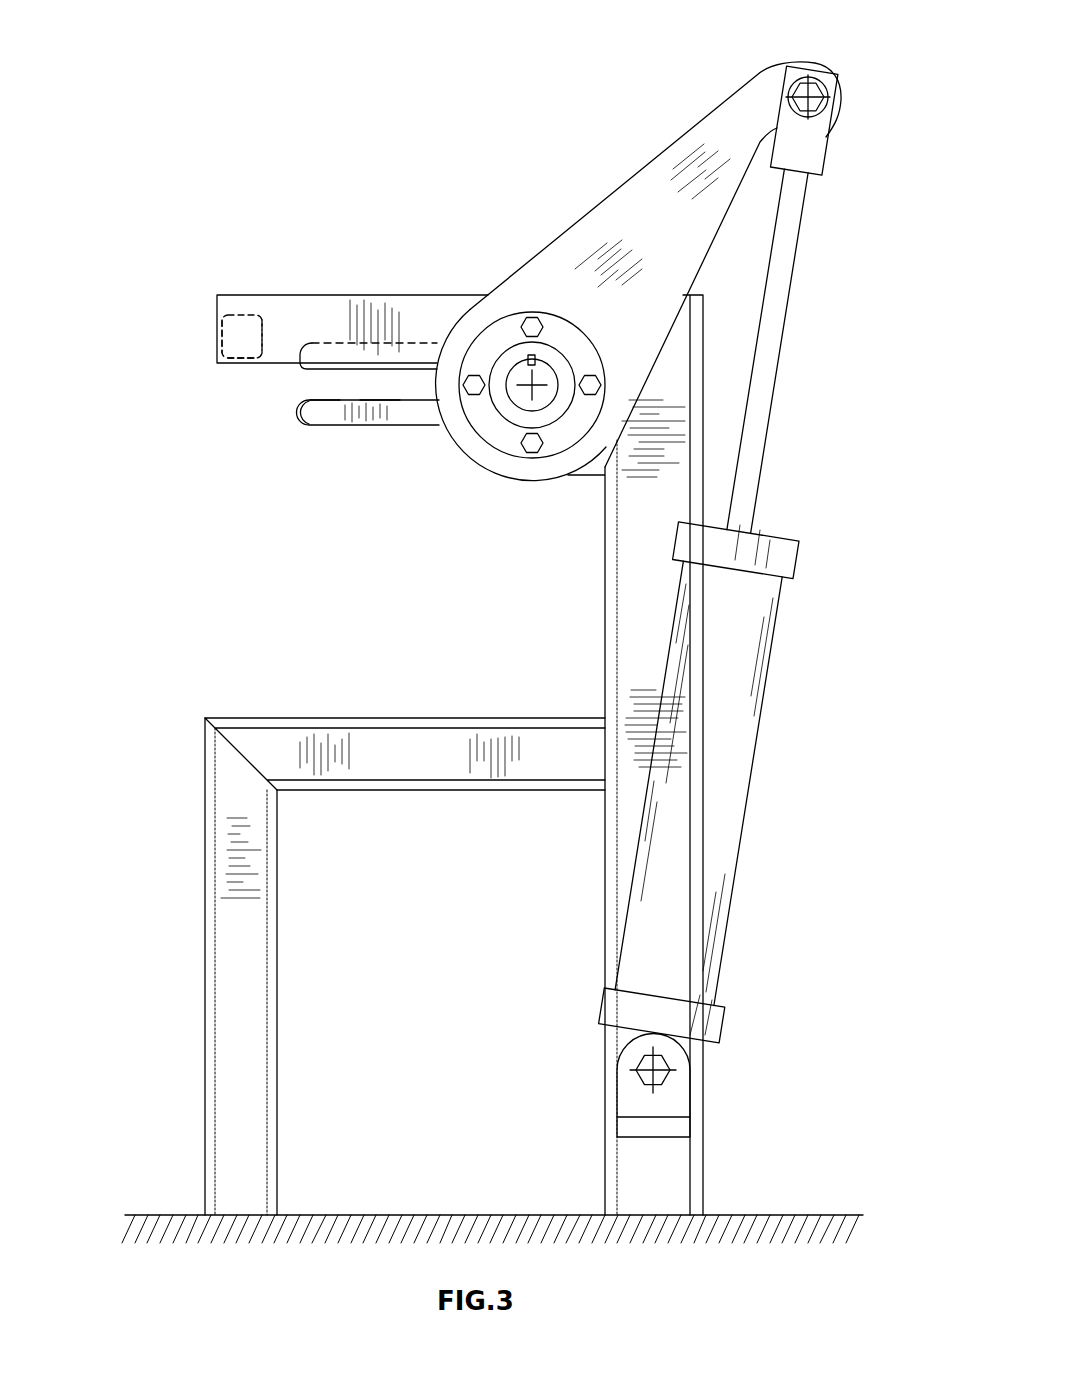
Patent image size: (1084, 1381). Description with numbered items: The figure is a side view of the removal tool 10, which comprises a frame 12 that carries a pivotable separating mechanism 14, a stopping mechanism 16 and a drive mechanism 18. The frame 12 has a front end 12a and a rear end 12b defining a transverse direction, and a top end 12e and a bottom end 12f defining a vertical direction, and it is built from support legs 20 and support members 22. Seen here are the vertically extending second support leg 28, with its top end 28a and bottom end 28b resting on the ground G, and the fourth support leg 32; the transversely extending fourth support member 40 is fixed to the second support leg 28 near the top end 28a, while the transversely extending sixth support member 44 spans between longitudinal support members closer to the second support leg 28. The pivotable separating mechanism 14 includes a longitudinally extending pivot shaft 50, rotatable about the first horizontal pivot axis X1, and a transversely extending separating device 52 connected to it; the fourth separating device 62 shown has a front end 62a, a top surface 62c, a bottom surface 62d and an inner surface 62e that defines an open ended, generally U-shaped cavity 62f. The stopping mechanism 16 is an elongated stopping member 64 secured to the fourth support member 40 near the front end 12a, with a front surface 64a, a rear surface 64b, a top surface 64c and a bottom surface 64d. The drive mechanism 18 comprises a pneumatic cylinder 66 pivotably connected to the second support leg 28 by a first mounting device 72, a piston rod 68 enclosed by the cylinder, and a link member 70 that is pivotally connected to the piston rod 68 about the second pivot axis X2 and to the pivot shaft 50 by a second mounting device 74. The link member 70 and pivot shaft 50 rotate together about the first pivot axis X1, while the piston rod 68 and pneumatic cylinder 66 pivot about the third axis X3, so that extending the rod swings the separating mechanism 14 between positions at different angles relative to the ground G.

The removal tool 10 is at (272, 88).
The frame 12 is at (502, 675).
The front end 12a is at (167, 748).
The rear end 12b is at (822, 628).
The top end 12e is at (430, 108).
The bottom end 12f is at (338, 1257).
The pivotable separating mechanism 14 is at (286, 383).
The stopping mechanism 16 is at (245, 273).
The drive mechanism 18 is at (732, 606).
The support legs 20 is at (538, 686).
The support members 22 is at (405, 724).
The second support leg 28 is at (659, 686).
The top end 28a is at (697, 283).
The bottom end 28b is at (667, 1217).
The fourth support leg 32 is at (278, 978).
The fourth support member 40 is at (292, 291).
The sixth support member 44 is at (445, 717).
The pivot shaft 50 is at (543, 403).
The separating device 52 is at (280, 444).
The fourth separating device 62 is at (280, 444).
The front end 62a is at (297, 413).
The top surface 62c is at (408, 343).
The bottom surface 62d is at (328, 428).
The inner surface 62e is at (325, 398).
The cavity 62f is at (388, 392).
The stopping member 64 is at (245, 273).
The front surface 64a is at (217, 333).
The rear surface 64b is at (270, 337).
The top surface 64c is at (243, 312).
The bottom surface 64d is at (242, 366).
The pneumatic cylinder 66 is at (752, 783).
The piston rod 68 is at (782, 342).
The link member 70 is at (639, 309).
The first mounting device 72 is at (560, 335).
The second mounting device 74 is at (667, 1105).
The first pivot axis X1 is at (532, 385).
The second pivot axis X2 is at (815, 103).
The third axis X3 is at (660, 1083).
The ground G is at (760, 1215).